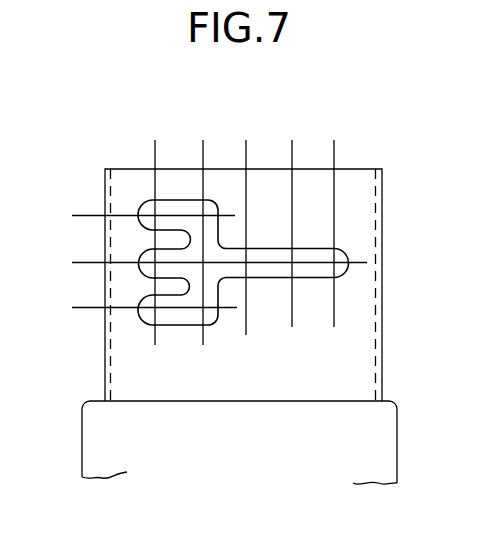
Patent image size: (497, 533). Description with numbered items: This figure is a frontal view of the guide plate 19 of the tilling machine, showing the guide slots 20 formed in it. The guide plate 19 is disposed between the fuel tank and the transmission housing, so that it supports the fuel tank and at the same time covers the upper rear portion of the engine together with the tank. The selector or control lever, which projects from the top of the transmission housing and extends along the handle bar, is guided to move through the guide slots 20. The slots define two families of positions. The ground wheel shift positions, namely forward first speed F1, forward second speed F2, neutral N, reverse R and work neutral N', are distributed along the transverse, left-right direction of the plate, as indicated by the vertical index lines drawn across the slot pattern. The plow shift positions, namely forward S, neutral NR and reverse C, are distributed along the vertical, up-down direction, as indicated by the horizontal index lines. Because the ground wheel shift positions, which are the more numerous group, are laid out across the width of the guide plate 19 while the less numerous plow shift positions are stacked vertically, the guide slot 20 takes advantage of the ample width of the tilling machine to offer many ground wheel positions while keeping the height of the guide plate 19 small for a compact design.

The guide plate 19 is at (368, 162).
The guide slots 20 is at (312, 255).
The forward first speed position F1 is at (153, 229).
The work neutral position N' is at (205, 229).
The reverse position R is at (246, 224).
The neutral position N is at (292, 220).
The forward second speed position F2 is at (336, 220).
The plow reverse position C is at (135, 219).
The plow neutral position NR is at (202, 267).
The plow forward position S is at (137, 310).